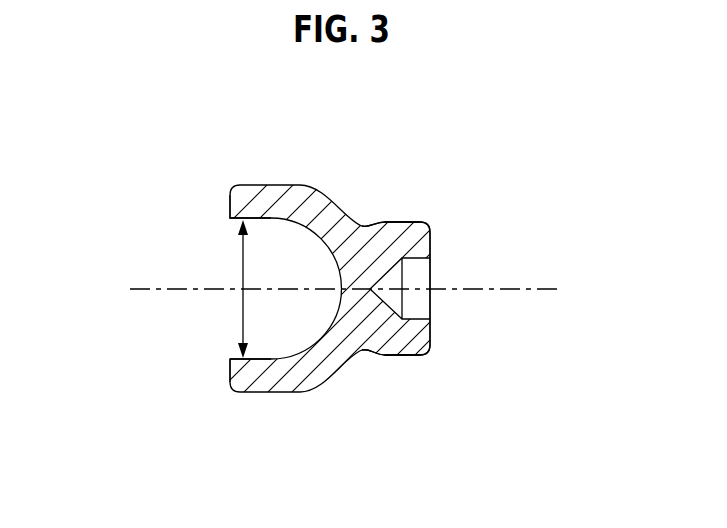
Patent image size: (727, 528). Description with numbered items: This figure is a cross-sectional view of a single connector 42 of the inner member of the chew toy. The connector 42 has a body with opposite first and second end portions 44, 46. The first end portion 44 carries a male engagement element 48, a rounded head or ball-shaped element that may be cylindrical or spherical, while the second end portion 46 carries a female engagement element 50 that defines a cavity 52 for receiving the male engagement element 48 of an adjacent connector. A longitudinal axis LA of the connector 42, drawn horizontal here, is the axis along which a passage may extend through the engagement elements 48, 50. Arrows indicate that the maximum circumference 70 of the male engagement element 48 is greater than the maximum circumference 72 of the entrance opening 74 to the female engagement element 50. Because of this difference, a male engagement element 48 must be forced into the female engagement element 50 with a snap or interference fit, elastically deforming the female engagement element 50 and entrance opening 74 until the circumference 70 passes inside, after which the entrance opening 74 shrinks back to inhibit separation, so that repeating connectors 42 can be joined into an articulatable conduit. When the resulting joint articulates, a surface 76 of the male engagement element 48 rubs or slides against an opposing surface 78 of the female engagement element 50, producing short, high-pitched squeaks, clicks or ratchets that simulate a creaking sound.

The connector 42 is at (447, 140).
The first end portion 44 is at (457, 216).
The second end portion 46 is at (186, 226).
The male engagement element 48 is at (427, 346).
The female engagement element 50 is at (305, 223).
The cavity 52 is at (297, 334).
The maximum circumference 70 is at (402, 357).
The maximum circumference 72 is at (264, 289).
The entrance opening 74 is at (232, 357).
The surface 76 is at (403, 217).
The opposing surface 78 is at (254, 352).
The longitudinal axis LA is at (340, 283).